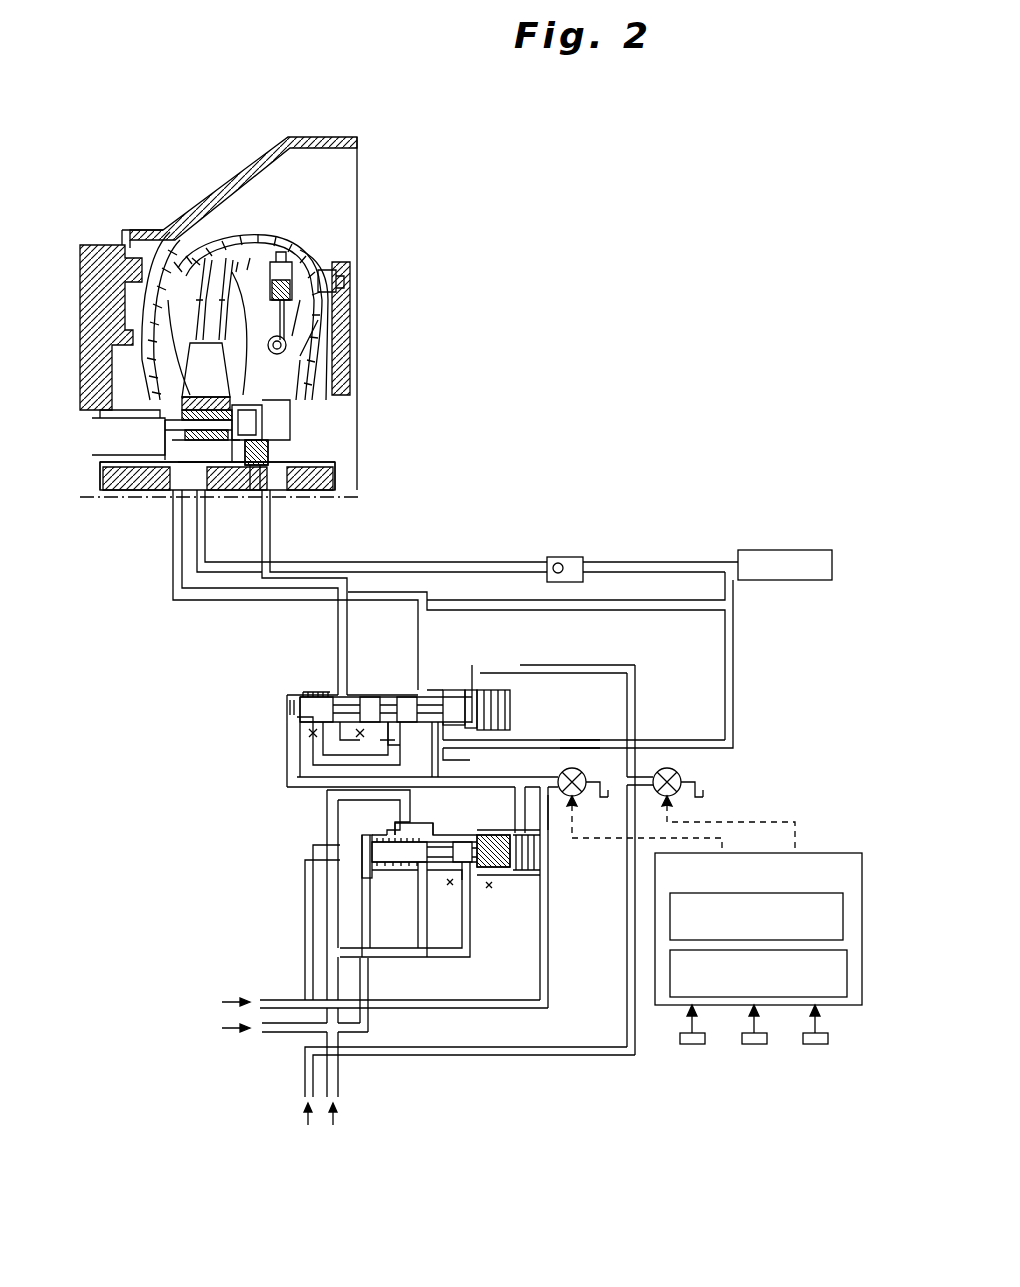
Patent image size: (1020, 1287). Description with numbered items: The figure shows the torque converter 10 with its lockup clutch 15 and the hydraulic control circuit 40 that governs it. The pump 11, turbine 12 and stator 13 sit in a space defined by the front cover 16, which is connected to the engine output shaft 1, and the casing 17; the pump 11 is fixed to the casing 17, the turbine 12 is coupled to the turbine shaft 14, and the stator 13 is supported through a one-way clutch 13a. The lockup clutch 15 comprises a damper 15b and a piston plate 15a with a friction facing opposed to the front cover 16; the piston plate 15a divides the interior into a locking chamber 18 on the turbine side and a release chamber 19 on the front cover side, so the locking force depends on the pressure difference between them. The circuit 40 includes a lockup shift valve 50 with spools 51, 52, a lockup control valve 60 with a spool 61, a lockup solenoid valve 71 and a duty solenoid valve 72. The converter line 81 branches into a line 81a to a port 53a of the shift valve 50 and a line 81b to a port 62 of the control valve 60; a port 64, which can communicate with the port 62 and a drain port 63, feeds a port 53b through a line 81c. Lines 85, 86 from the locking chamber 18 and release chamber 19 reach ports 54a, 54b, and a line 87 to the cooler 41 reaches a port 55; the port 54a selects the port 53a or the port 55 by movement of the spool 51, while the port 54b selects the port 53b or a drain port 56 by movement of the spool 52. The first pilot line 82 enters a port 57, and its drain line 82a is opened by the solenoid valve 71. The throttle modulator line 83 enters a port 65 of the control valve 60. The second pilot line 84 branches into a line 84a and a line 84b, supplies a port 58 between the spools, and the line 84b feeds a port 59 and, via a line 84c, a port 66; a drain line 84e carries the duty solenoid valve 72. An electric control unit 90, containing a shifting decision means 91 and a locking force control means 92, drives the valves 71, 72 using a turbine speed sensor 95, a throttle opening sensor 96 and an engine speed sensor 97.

The engine output shaft 1 is at (325, 483).
The torque converter 10 is at (322, 238).
The pump 11 is at (178, 285).
The turbine 12 is at (250, 282).
The stator 13 is at (200, 373).
The one-way clutch 13a is at (262, 425).
The turbine shaft 14 is at (268, 462).
The lockup clutch 15 is at (305, 260).
The piston plate 15a is at (336, 274).
The damper 15b is at (314, 360).
The front cover 16 is at (318, 322).
The casing 17 is at (190, 252).
The locking chamber 18 is at (244, 272).
The release chamber 19 is at (293, 345).
The hydraulic control circuit 40 is at (502, 548).
The cooler 41 is at (775, 550).
The lockup shift valve 50 is at (272, 688).
The spool 51 is at (490, 690).
The spool 52 is at (370, 697).
The port 53a is at (440, 748).
The port 53b is at (300, 722).
The port 54a is at (428, 694).
The port 54b is at (338, 694).
The port 55 is at (385, 728).
The drain port 56 is at (312, 727).
The port 57 is at (474, 694).
The port 58 is at (335, 737).
The port 59 is at (287, 705).
The lockup control valve 60 is at (360, 852).
The spool 61 is at (462, 848).
The port 62 is at (415, 865).
The drain port 63 is at (462, 868).
The port 64 is at (437, 835).
The port 65 is at (363, 866).
The port 66 is at (553, 822).
The lockup solenoid valve 71 is at (681, 780).
The duty solenoid valve 72 is at (578, 797).
The converter line 81 is at (340, 1038).
The line 81a is at (340, 929).
The line 81b is at (431, 935).
The line 81c is at (393, 826).
The first pilot line 82 is at (305, 1070).
The drain line 82a is at (645, 777).
The throttle modulator line 83 is at (281, 1030).
The second pilot line 84 is at (292, 999).
The line 84a is at (305, 930).
The line 84b is at (552, 928).
The line 84c is at (516, 787).
The drain line 84e is at (555, 766).
The line 85 is at (173, 552).
The line 86 is at (272, 514).
The line 87 is at (572, 740).
The electric control unit 90 is at (845, 853).
The shifting decision means 91 is at (848, 950).
The locking force control means 92 is at (848, 893).
The turbine speed sensor 95 is at (754, 1044).
The sensor 96 is at (692, 1044).
The engine speed sensor 97 is at (815, 1044).